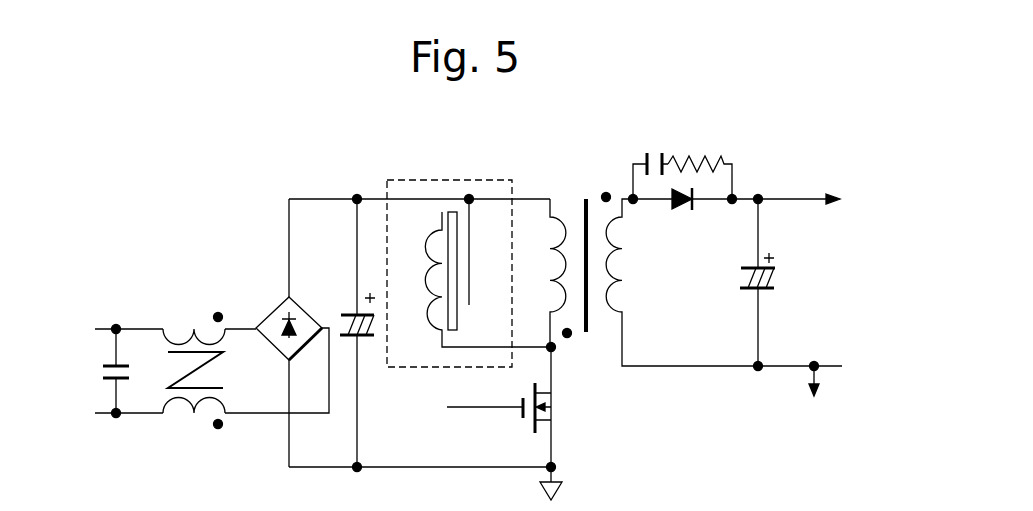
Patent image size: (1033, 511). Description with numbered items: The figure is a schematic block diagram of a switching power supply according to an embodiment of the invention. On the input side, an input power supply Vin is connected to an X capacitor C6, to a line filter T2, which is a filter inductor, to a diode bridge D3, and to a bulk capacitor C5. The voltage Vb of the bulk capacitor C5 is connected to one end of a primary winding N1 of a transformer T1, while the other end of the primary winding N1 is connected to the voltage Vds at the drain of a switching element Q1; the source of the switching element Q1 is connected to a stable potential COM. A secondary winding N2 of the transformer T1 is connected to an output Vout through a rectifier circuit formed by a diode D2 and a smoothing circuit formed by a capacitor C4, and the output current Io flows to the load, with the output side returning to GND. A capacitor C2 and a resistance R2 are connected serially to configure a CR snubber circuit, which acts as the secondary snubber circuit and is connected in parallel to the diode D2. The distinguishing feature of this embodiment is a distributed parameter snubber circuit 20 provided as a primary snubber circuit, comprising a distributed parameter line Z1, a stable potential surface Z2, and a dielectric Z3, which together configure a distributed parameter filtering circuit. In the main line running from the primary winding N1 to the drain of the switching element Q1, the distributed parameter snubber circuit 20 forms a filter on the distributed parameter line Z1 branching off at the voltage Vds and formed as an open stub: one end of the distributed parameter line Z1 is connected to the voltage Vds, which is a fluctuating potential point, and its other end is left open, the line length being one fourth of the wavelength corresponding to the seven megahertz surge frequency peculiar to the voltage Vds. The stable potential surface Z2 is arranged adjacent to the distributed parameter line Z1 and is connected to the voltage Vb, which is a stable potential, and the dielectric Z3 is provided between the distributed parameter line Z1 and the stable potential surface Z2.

The distributed parameter snubber circuit 20 is at (450, 165).
The line filter T2 is at (239, 358).
The X capacitor C6 is at (112, 394).
The input power supply Vin is at (109, 371).
The diode bridge D3 is at (280, 333).
The voltage of the bulk capacitor Vb is at (419, 185).
The bulk capacitor C5 is at (365, 335).
The stable potential COM is at (425, 485).
The distributed parameter line Z1 is at (474, 279).
The stable potential surface Z2 is at (487, 252).
The dielectric Z3 is at (468, 276).
The primary winding N1 is at (541, 273).
The transformer T1 is at (587, 248).
The secondary winding N2 is at (682, 281).
The voltage of the drain Vds is at (574, 405).
The switching element Q1 is at (499, 406).
The capacitor C2 is at (651, 161).
The resistance R2 is at (700, 161).
The diode D2 is at (695, 214).
The output current Io is at (784, 181).
The capacitor C4 is at (770, 282).
The output Vout is at (814, 321).
The output ground GND is at (775, 383).